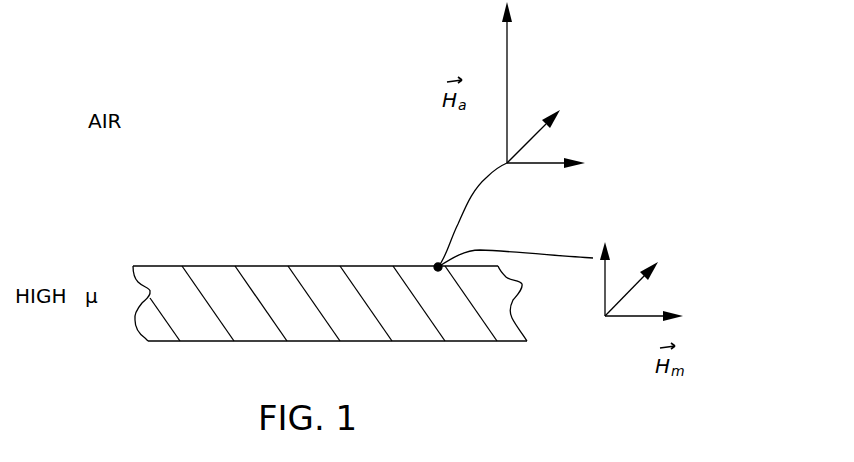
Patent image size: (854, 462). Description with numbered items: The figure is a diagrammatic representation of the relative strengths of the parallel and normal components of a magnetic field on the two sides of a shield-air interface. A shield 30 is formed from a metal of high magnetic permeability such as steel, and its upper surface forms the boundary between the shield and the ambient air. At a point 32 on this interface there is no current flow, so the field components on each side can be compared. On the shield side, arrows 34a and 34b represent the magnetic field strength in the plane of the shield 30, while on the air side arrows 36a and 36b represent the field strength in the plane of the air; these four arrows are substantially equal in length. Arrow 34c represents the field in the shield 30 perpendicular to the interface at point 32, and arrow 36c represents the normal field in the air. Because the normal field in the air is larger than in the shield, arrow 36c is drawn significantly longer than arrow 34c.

The shield 30 is at (287, 341).
The interface point 32 is at (435, 264).
The arrow 34a is at (645, 313).
The arrow 34b is at (640, 288).
The arrow 34c is at (615, 270).
The arrow 36a is at (540, 167).
The arrow 36b is at (530, 142).
The arrow 36c is at (510, 42).